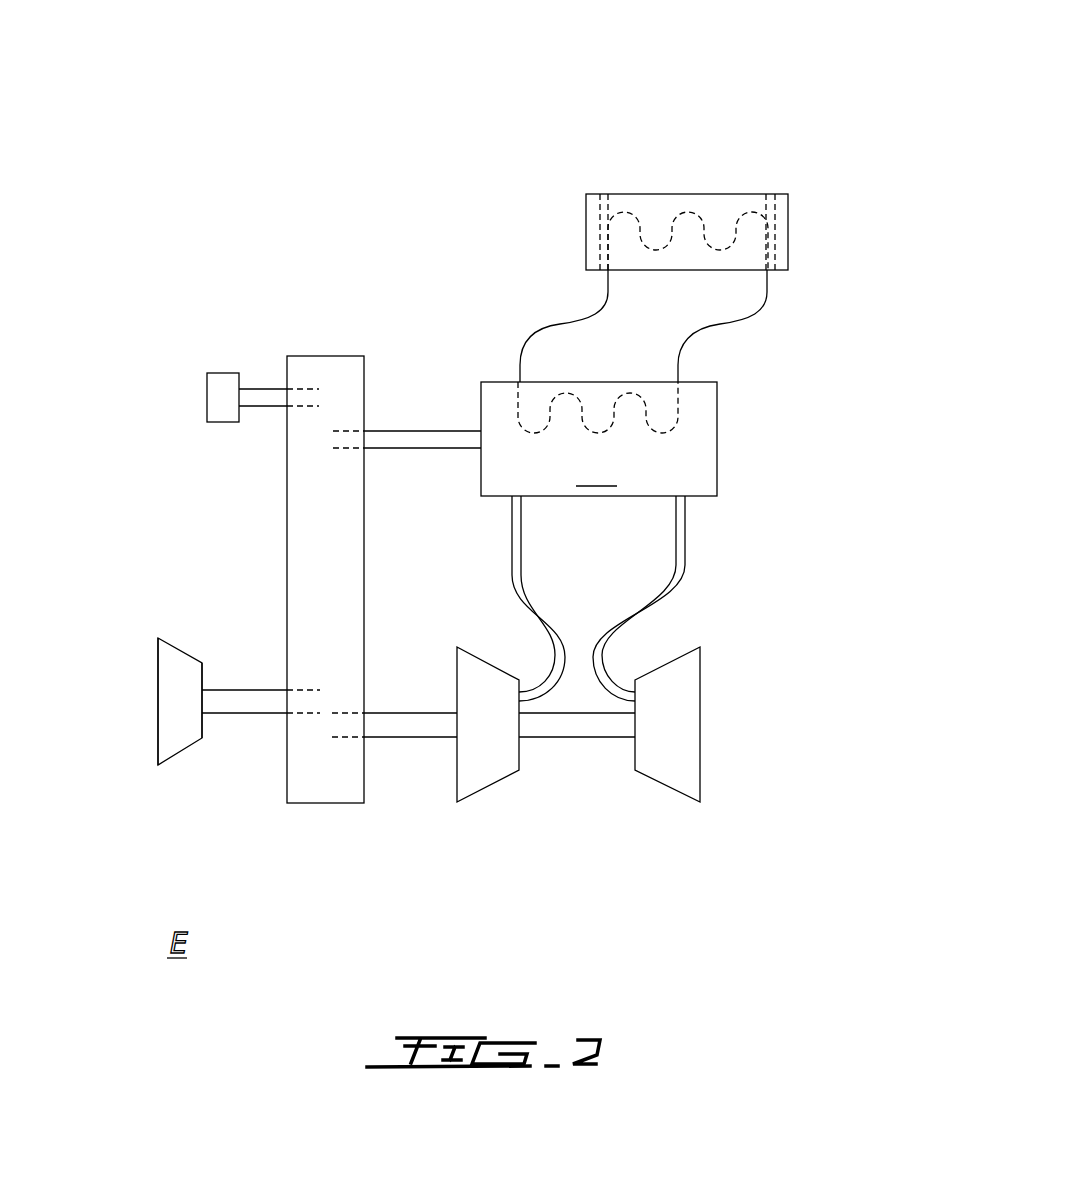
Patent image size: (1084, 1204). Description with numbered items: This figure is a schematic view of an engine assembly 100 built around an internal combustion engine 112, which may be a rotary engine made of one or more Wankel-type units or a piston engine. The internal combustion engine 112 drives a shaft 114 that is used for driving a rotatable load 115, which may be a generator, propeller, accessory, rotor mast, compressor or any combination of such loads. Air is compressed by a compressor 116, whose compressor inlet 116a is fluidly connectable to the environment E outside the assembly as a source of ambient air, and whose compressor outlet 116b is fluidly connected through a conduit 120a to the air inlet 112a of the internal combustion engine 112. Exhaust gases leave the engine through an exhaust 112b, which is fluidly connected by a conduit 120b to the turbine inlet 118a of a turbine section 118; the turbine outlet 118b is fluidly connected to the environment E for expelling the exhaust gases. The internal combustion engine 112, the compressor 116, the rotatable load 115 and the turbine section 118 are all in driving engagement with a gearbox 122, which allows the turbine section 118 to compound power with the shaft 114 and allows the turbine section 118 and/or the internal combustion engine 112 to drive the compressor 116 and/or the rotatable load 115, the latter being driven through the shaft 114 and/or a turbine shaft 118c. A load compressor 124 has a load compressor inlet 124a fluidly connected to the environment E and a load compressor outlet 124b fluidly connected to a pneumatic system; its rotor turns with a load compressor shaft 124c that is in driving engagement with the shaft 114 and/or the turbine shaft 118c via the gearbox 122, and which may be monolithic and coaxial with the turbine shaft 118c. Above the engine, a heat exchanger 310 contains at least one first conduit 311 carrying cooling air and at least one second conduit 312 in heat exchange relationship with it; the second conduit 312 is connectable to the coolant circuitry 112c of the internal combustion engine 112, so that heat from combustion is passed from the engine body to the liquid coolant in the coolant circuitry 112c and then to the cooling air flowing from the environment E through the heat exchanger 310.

The engine assembly 100 is at (839, 62).
The heat exchanger 310 is at (819, 200).
The first conduit 311 is at (605, 212).
The second conduit 312 is at (707, 216).
The internal combustion engine 112 is at (599, 439).
The air inlet 112a is at (493, 517).
The exhaust 112b is at (705, 517).
The coolant circuitry 112c is at (665, 432).
The shaft 114 is at (420, 430).
The rotatable load 115 is at (207, 395).
The compressor 116 is at (487, 788).
The compressor inlet 116a is at (440, 785).
The compressor outlet 116b is at (503, 702).
The turbine section 118 is at (667, 790).
The turbine inlet 118a is at (631, 667).
The turbine outlet 118b is at (703, 767).
The turbine shaft 118c is at (545, 737).
The conduit 120a is at (512, 575).
The conduit 120b is at (688, 575).
The gearbox 122 is at (287, 505).
The load compressor 124 is at (127, 772).
The load compressor inlet 124a is at (158, 700).
The load compressor outlet 124b is at (203, 722).
The load compressor shaft 124c is at (243, 690).